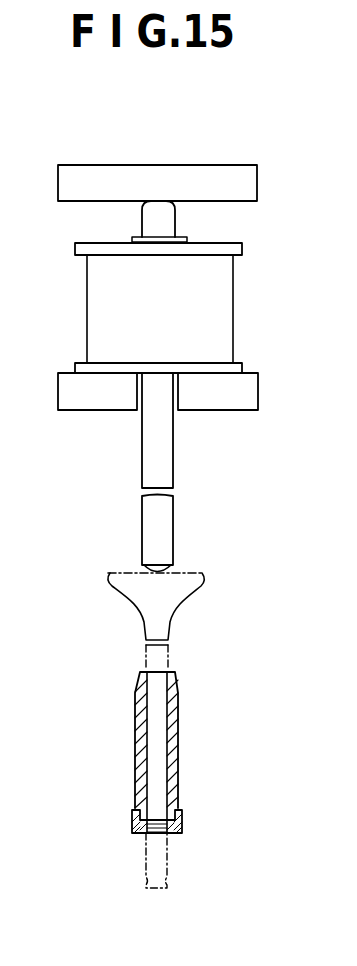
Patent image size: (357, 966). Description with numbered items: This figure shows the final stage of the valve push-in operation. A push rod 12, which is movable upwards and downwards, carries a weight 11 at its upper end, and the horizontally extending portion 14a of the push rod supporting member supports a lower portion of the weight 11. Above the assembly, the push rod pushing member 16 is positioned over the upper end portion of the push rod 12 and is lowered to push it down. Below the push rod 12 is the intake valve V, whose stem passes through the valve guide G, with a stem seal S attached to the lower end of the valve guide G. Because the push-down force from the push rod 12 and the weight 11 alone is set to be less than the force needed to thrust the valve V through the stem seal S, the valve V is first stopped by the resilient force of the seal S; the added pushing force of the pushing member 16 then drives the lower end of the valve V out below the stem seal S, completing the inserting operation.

The push rod pushing member 16 is at (95, 178).
The weight 11 is at (103, 305).
The horizontally extending portion 14a is at (82, 393).
The push rod 12 is at (160, 518).
The intake valve V is at (152, 612).
The valve guide G is at (168, 710).
The stem seal S is at (137, 823).